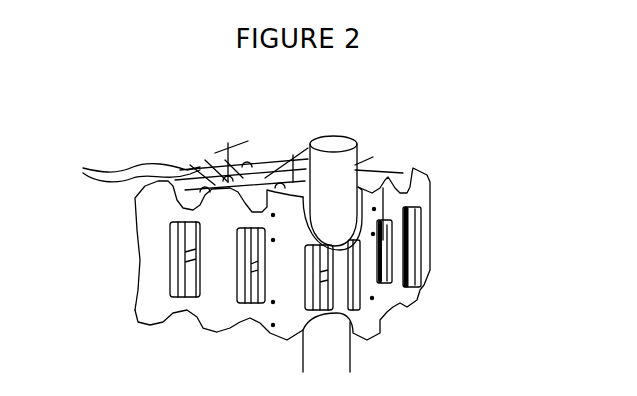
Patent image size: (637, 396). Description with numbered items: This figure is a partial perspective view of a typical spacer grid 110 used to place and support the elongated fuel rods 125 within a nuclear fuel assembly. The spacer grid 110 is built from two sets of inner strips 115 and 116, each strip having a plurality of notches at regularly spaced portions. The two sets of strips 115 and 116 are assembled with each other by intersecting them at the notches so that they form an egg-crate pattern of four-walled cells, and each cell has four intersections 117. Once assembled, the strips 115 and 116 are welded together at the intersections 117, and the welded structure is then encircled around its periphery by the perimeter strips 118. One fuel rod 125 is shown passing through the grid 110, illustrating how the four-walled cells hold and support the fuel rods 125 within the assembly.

The spacer grid 110 is at (193, 321).
The inner strips 115 is at (126, 166).
The inner strips 116 is at (243, 177).
The intersections 117 is at (290, 182).
The perimeter strips 118 is at (400, 265).
The fuel rods 125 is at (348, 353).